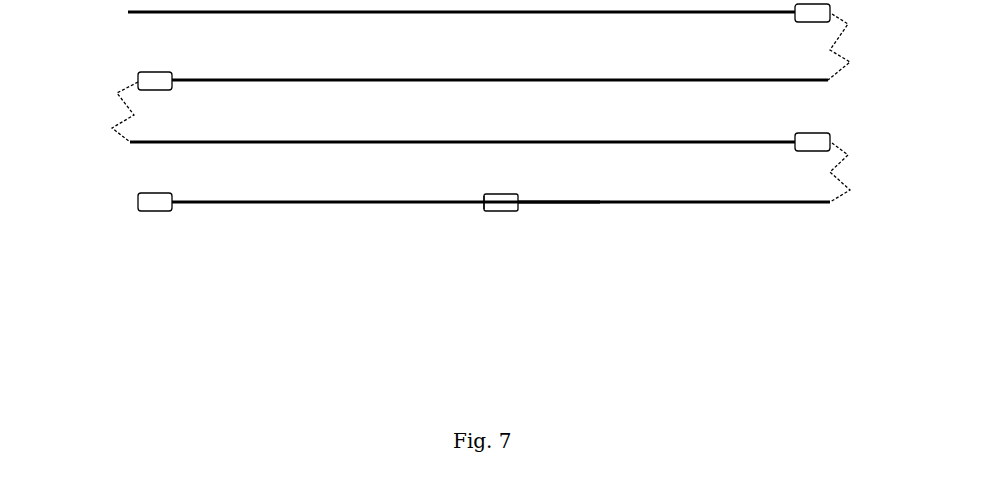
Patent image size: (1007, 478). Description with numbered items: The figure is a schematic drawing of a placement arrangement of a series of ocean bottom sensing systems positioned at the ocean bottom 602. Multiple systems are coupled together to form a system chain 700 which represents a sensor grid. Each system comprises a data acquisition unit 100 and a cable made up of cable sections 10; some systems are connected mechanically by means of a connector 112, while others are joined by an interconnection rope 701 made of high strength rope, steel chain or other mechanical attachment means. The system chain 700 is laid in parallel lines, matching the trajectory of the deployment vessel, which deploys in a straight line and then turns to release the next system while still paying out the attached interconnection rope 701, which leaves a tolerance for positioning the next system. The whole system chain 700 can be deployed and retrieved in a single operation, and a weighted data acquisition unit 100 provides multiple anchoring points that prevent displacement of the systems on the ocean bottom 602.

The system chain 700 is at (219, 203).
The interconnection rope 701 is at (830, 50).
The data acquisition unit 100 is at (500, 212).
The connector 112 is at (485, 200).
The cable section 10 is at (563, 204).
The ocean bottom 602 is at (645, 272).